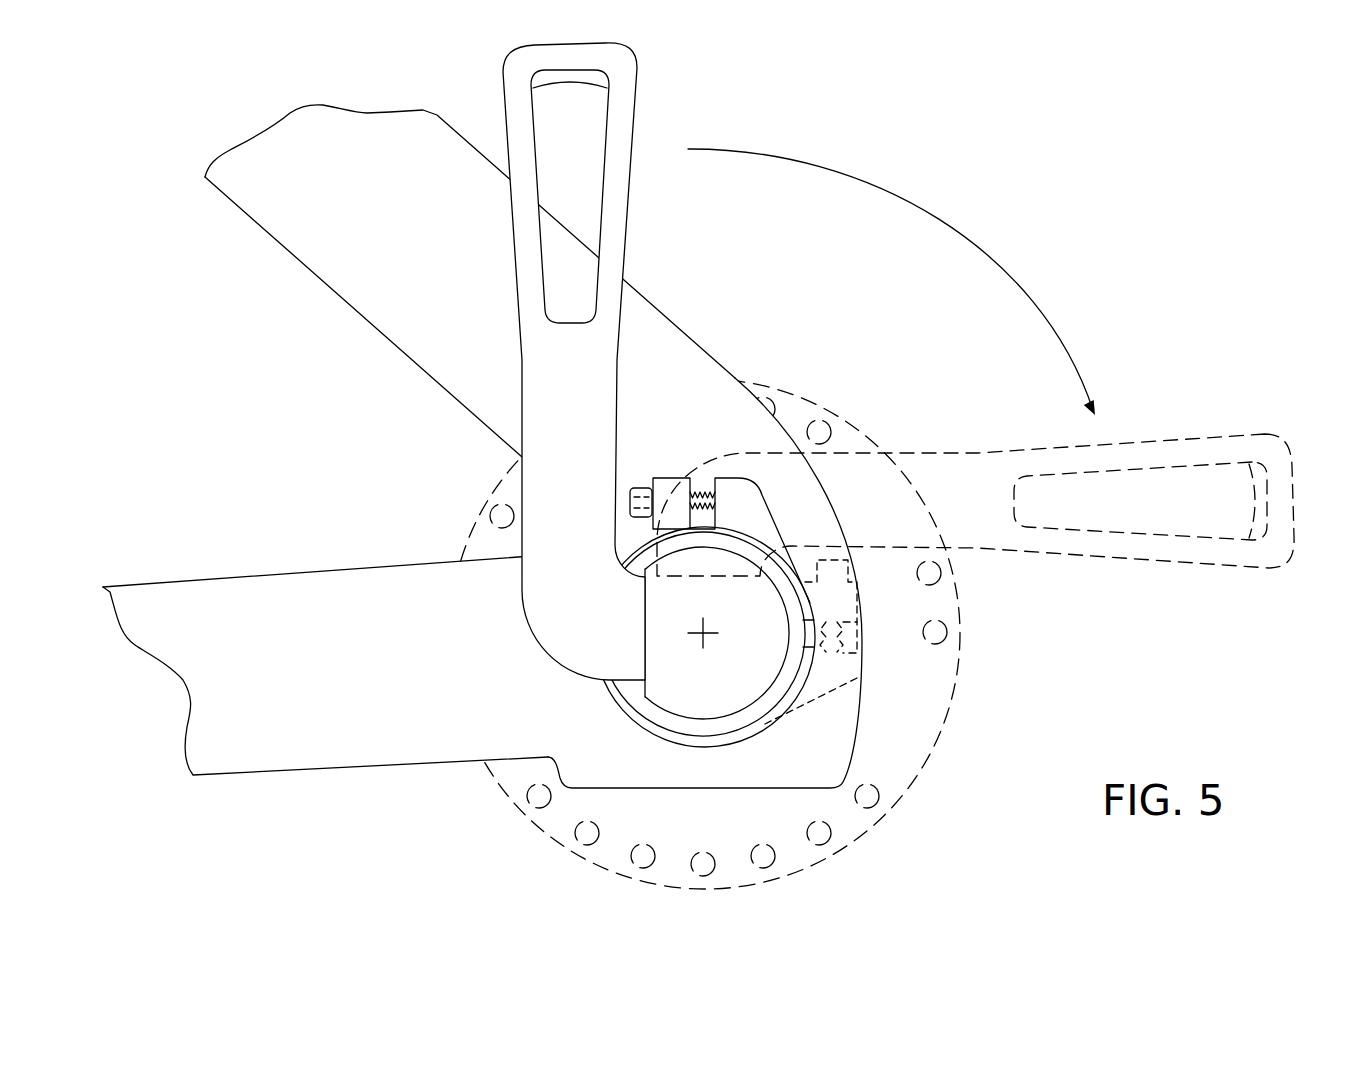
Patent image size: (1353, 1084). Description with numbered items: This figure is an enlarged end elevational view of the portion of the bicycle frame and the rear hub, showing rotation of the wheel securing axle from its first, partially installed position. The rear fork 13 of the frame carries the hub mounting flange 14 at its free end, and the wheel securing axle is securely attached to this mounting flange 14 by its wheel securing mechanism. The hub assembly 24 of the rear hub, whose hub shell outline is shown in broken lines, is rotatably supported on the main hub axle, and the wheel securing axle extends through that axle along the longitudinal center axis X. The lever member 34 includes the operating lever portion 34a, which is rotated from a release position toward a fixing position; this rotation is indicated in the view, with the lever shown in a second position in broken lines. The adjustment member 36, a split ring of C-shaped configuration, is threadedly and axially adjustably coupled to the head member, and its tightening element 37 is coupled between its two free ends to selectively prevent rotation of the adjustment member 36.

The rear fork 13 is at (458, 117).
The hub mounting flange 14 is at (680, 763).
The hub assembly 24 is at (963, 634).
The lever member 34 is at (660, 106).
The operating lever portion 34a is at (613, 218).
The adjustment member 36 is at (756, 478).
The tightening element 37 is at (641, 484).
The longitudinal center axis X is at (704, 634).